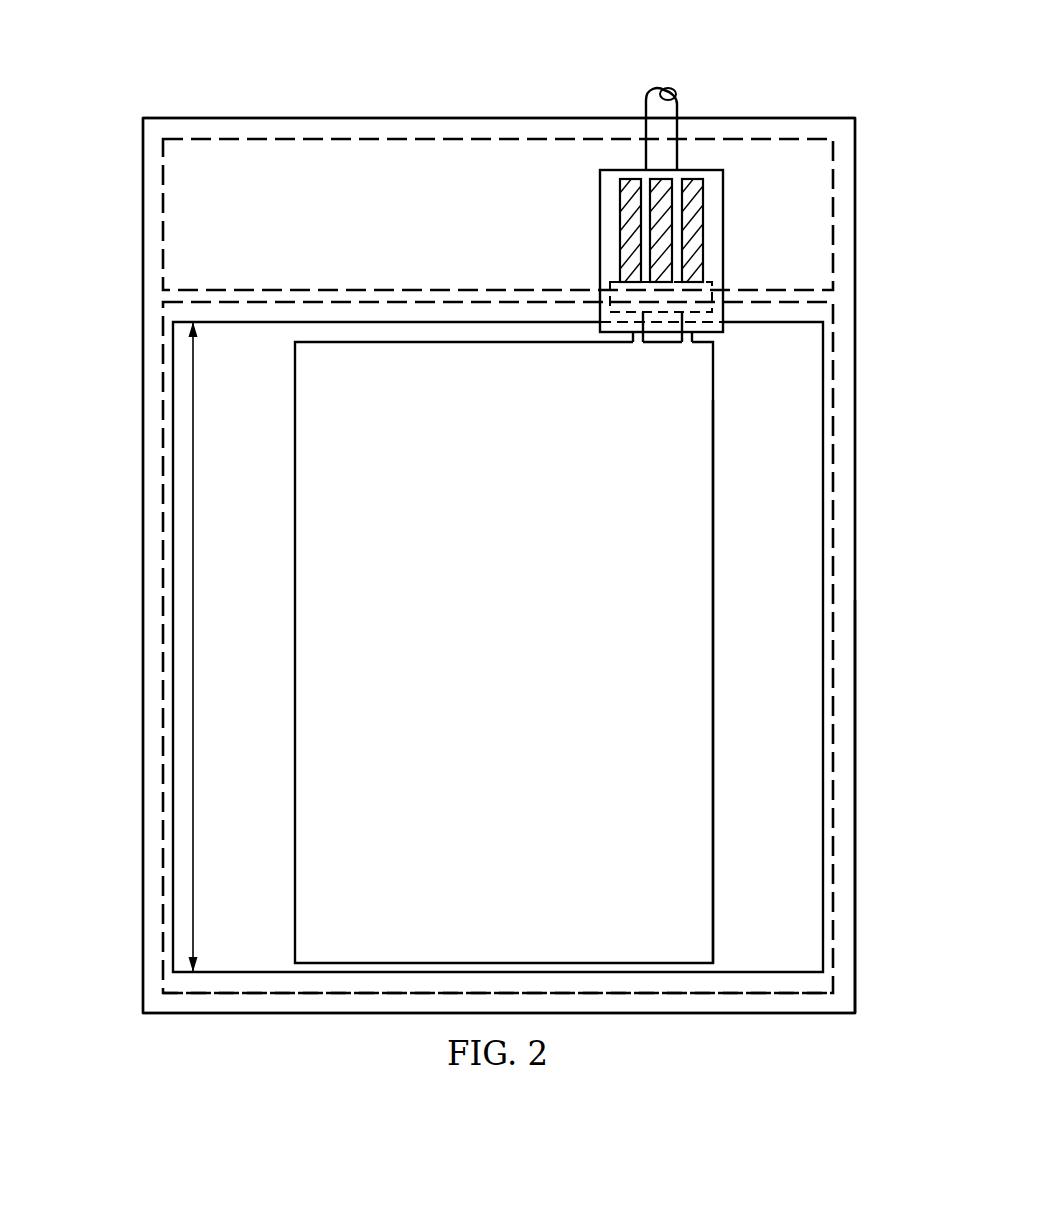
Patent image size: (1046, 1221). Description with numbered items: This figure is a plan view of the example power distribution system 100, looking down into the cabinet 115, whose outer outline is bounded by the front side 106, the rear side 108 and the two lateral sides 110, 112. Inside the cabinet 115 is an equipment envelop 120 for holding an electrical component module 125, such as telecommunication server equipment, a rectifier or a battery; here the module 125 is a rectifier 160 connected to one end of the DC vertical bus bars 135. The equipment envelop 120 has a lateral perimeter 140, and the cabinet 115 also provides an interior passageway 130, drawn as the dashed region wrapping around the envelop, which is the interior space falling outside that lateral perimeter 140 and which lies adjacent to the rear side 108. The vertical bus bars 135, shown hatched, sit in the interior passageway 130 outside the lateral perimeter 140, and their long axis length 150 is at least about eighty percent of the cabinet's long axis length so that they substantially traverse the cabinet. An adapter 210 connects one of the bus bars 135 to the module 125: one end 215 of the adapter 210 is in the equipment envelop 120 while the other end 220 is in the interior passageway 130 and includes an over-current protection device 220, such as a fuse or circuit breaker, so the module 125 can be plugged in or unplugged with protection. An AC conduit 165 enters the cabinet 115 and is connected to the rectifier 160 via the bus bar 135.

The power distribution system 100 is at (226, 53).
The front side 106 is at (233, 1015).
The rear side 108 is at (793, 117).
The lateral side 110 is at (142, 738).
The lateral side 112 is at (868, 986).
The cabinet 115 is at (367, 118).
The equipment envelop 120 is at (263, 642).
The electrical component module 125 is at (725, 553).
The interior passageway 130 is at (152, 212).
The vertical bus bar 135 is at (609, 196).
The lateral perimeter 140 is at (655, 994).
The long axis length 150 is at (193, 758).
The rectifier 160 is at (523, 667).
The AC conduit 165 is at (677, 105).
The adapter 210 is at (723, 230).
The end of the adapter 215 is at (617, 333).
The over-current protection device 220 is at (600, 108).